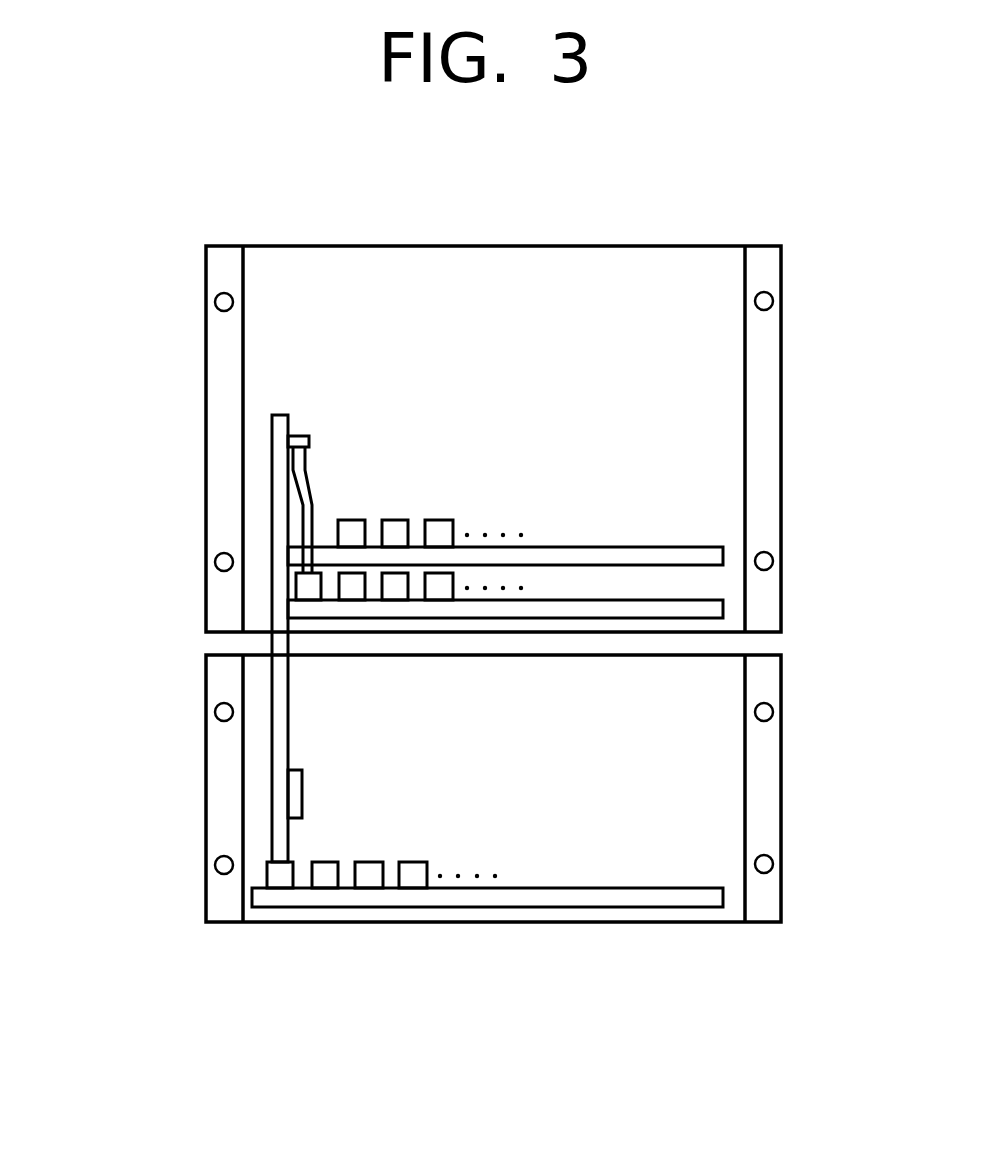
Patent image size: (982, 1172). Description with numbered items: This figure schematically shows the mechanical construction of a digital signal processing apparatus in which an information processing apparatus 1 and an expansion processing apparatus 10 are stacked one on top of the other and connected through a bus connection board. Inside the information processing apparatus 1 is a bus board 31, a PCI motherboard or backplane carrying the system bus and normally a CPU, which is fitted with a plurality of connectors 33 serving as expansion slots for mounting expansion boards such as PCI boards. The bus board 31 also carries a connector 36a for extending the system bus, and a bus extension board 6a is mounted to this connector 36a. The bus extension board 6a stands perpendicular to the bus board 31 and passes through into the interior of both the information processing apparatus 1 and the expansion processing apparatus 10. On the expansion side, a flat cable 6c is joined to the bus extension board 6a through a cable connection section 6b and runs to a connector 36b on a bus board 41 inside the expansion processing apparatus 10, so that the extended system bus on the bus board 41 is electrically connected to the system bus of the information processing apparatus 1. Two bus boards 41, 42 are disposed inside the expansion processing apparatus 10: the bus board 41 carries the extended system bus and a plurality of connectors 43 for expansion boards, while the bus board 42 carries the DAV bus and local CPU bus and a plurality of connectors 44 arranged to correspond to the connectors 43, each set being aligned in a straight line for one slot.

The expansion processing apparatus 10 is at (172, 346).
The information processing apparatus 1 is at (170, 788).
The bus extension board 6a is at (283, 648).
The cable connection section 6b is at (298, 442).
The flat cable 6c is at (305, 467).
The bus board 42 is at (700, 556).
The bus board 41 is at (707, 608).
The connectors 44 is at (395, 528).
The connectors 43 is at (397, 600).
The connector 36b is at (298, 593).
The bus board 31 is at (545, 900).
The connector 36a is at (278, 882).
The connectors 33 is at (370, 882).